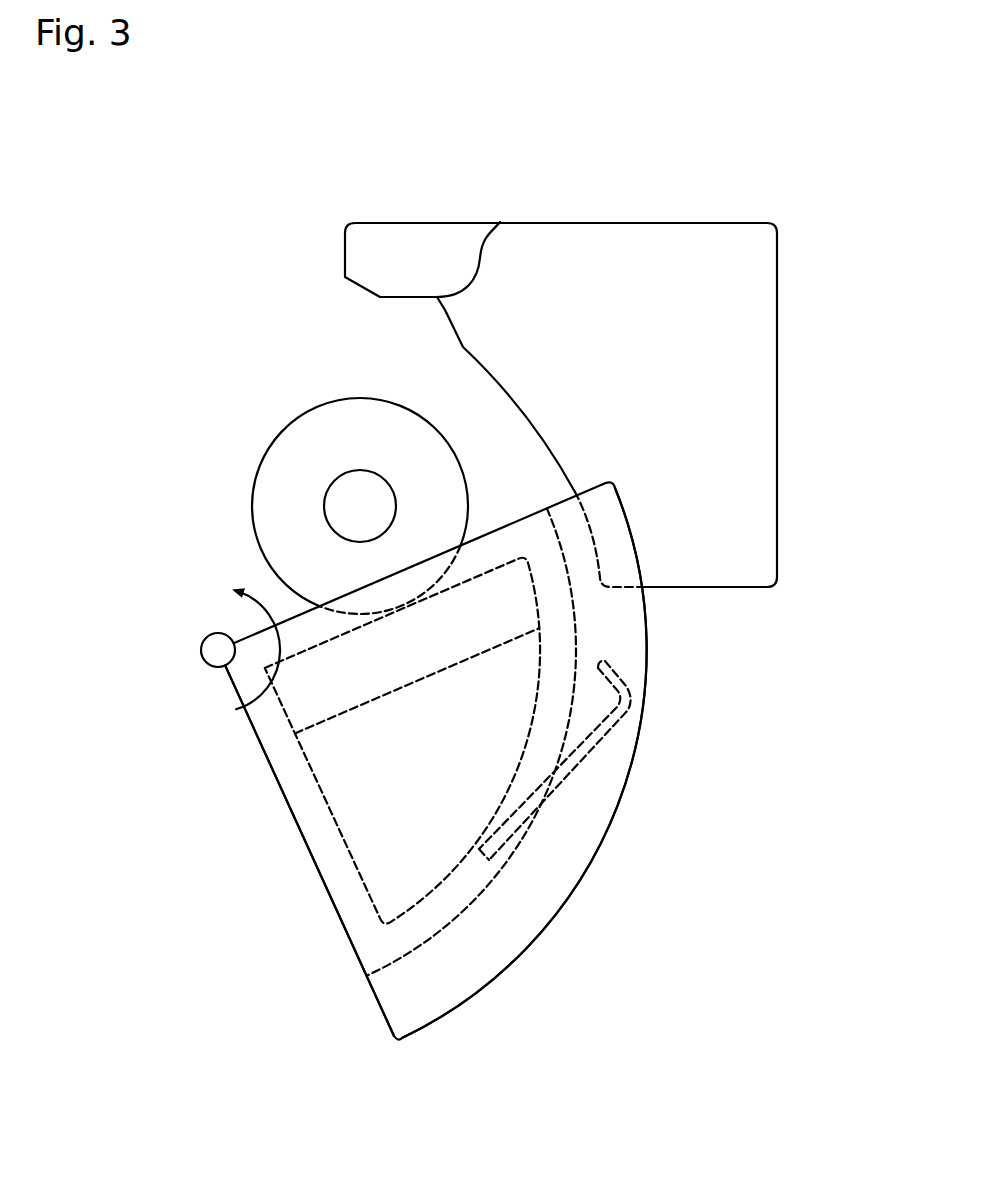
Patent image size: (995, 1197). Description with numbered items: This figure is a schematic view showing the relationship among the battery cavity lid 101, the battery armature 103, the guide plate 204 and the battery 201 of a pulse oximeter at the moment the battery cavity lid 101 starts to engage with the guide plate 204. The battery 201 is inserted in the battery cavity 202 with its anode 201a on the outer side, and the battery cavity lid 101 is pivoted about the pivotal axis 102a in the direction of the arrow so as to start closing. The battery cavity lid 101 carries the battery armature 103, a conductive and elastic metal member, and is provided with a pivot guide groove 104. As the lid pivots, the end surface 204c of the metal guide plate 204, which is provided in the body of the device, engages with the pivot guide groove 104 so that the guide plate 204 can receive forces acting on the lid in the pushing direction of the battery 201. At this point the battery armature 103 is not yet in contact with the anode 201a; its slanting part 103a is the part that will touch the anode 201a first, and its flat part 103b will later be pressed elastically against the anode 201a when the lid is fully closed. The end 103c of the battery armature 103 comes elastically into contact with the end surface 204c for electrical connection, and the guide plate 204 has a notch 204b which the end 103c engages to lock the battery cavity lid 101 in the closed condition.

The battery cavity lid 101 is at (358, 910).
The pivotal axis 102a is at (202, 653).
The battery armature 103 is at (218, 766).
The slanting part 103a is at (313, 700).
The flat part 103b is at (370, 805).
The end of the battery armature 103c is at (610, 727).
The pivot guide groove 104 is at (498, 938).
The battery 201 is at (275, 510).
The anode 201a is at (353, 503).
The battery cavity 202 is at (397, 348).
The guide plate 204 is at (718, 270).
The notch 204b is at (486, 246).
The end surface of the guide plate 204c is at (593, 530).